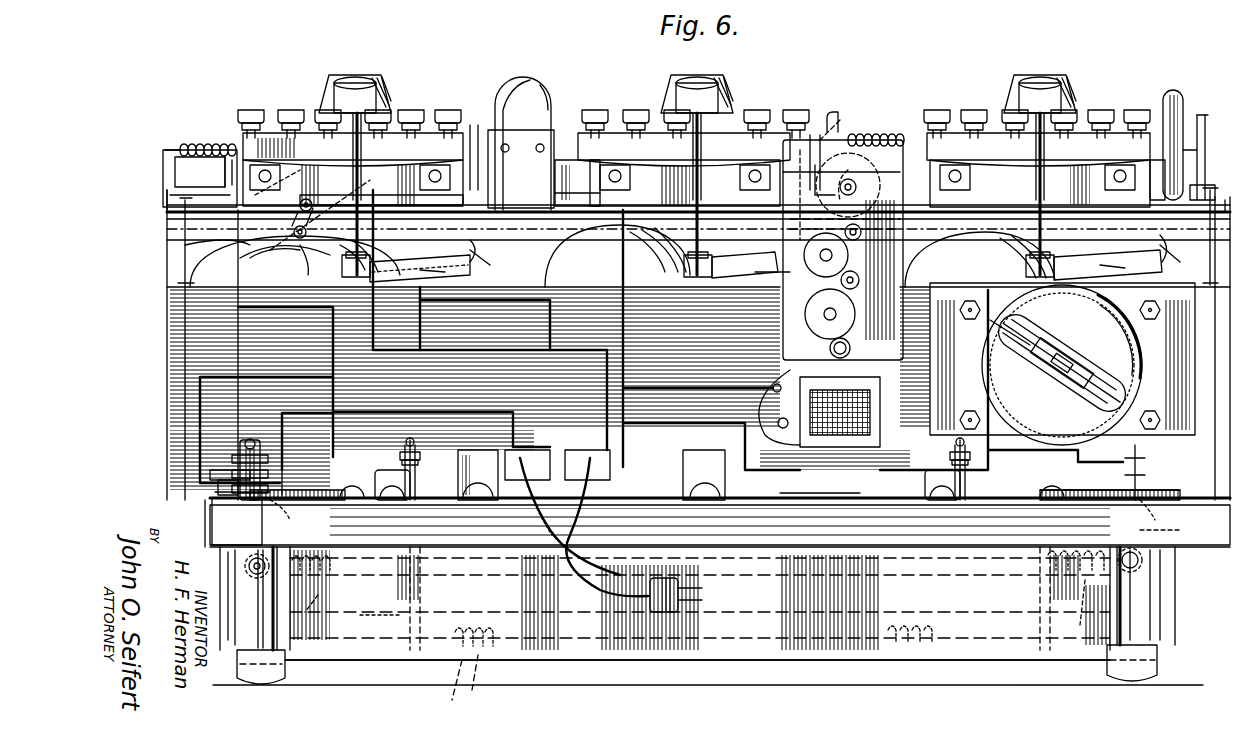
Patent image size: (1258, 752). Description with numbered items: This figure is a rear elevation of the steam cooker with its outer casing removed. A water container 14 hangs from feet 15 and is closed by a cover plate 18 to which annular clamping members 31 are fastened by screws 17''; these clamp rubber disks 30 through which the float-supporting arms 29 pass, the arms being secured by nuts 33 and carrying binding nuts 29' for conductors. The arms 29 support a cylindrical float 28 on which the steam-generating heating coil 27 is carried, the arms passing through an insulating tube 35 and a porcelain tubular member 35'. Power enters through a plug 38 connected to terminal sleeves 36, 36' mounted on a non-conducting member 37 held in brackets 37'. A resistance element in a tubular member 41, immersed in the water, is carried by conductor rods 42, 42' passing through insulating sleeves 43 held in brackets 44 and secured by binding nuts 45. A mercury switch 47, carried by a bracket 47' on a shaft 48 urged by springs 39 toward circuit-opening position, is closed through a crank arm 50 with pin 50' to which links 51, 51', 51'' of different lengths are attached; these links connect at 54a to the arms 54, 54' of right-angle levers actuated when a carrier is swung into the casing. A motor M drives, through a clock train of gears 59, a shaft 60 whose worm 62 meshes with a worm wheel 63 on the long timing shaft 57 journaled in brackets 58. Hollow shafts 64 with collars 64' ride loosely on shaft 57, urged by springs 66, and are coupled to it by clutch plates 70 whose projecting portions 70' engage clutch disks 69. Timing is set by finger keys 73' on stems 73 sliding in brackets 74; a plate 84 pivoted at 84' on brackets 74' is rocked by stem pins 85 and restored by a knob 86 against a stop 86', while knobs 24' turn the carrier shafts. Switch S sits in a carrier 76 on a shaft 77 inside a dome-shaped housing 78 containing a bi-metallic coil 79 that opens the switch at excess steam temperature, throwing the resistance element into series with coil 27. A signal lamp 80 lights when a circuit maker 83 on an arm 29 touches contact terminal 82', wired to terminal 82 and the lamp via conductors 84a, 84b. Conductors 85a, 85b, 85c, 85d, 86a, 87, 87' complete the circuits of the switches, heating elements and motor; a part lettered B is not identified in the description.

The container 14 is at (335, 658).
The feet 15 is at (266, 682).
The screws 17'' is at (694, 475).
The plate 18 is at (790, 500).
The knob 24' is at (733, 166).
The heating element 27 is at (698, 595).
The cylindrical float 28 is at (1040, 608).
The arms 29 is at (715, 466).
The binding nuts 29' is at (743, 459).
The disks 30 is at (237, 521).
The annular clamping members 31 is at (295, 492).
The nuts 33 is at (725, 515).
The tube of insulating material 35 is at (230, 558).
The tubular member of porcelain 35' is at (1164, 562).
The contact terminal sleeve 36 is at (562, 512).
The contact terminal sleeve 36' is at (606, 523).
The member of non-conducting material 37 is at (463, 475).
The brackets 37' is at (717, 475).
The electrical connection plug 38 is at (703, 596).
The springs 39 is at (490, 248).
The resistance element 41 is at (468, 684).
The conductor rod 42 is at (376, 627).
The conductor rod 42' is at (936, 651).
The sleeves of insulating material 43 is at (425, 592).
The brackets 44 is at (378, 482).
The binding nuts 45 is at (400, 455).
The mercury switch 47 is at (217, 247).
The bracket 47' is at (285, 179).
The shaft 48 is at (312, 200).
The crank arm 50 is at (285, 273).
The pin 50' is at (275, 260).
The link 51 is at (420, 263).
The link 51' is at (745, 261).
The link 51'' is at (1108, 262).
The lever arm 54 is at (778, 286).
The lever arm 54' is at (831, 276).
The connection 54a is at (833, 247).
The rotatable shaft 57 is at (165, 154).
The brackets 58 is at (165, 195).
The clock train of gears 59 is at (810, 300).
The shaft 60 is at (885, 135).
The worm 62 is at (860, 130).
The worm wheel 63 is at (825, 125).
The hollow shaft 64 is at (200, 178).
The collar 64' is at (419, 145).
The spring 66 is at (195, 143).
The clutch disk 69 is at (1220, 100).
The clutch plate 70 is at (842, 130).
The projecting portions 70' is at (1156, 148).
The stems 73 is at (744, 171).
The finger keys 73' is at (694, 96).
The right angle bracket 74 is at (792, 183).
The brackets 74' is at (556, 187).
The carrier 76 is at (1060, 350).
The shaft 77 is at (1045, 368).
The dome shaped housing 78 is at (1018, 321).
The bi-metallic coil 79 is at (1135, 337).
The electric lamp 80 is at (528, 80).
The contact terminal 82 is at (190, 478).
The contact terminal 82' is at (201, 450).
The circuit maker 83 is at (220, 460).
The plate 84 is at (696, 138).
The pivot 84' is at (608, 180).
The conductor 84a is at (640, 348).
The conductor 84b is at (235, 372).
The stem pins 85 is at (696, 149).
The conductor 85a is at (582, 348).
The conductor 85b is at (310, 330).
The branch conductor 85c is at (695, 435).
The conductor 85d is at (980, 365).
The knob 86 is at (701, 77).
The stop 86' is at (703, 257).
The conductor 86a is at (478, 412).
The conductor 87 is at (730, 407).
The conductor 87' is at (699, 378).
The bell B is at (571, 304).
The electric motor M is at (819, 408).
The mercury switch S is at (1062, 364).